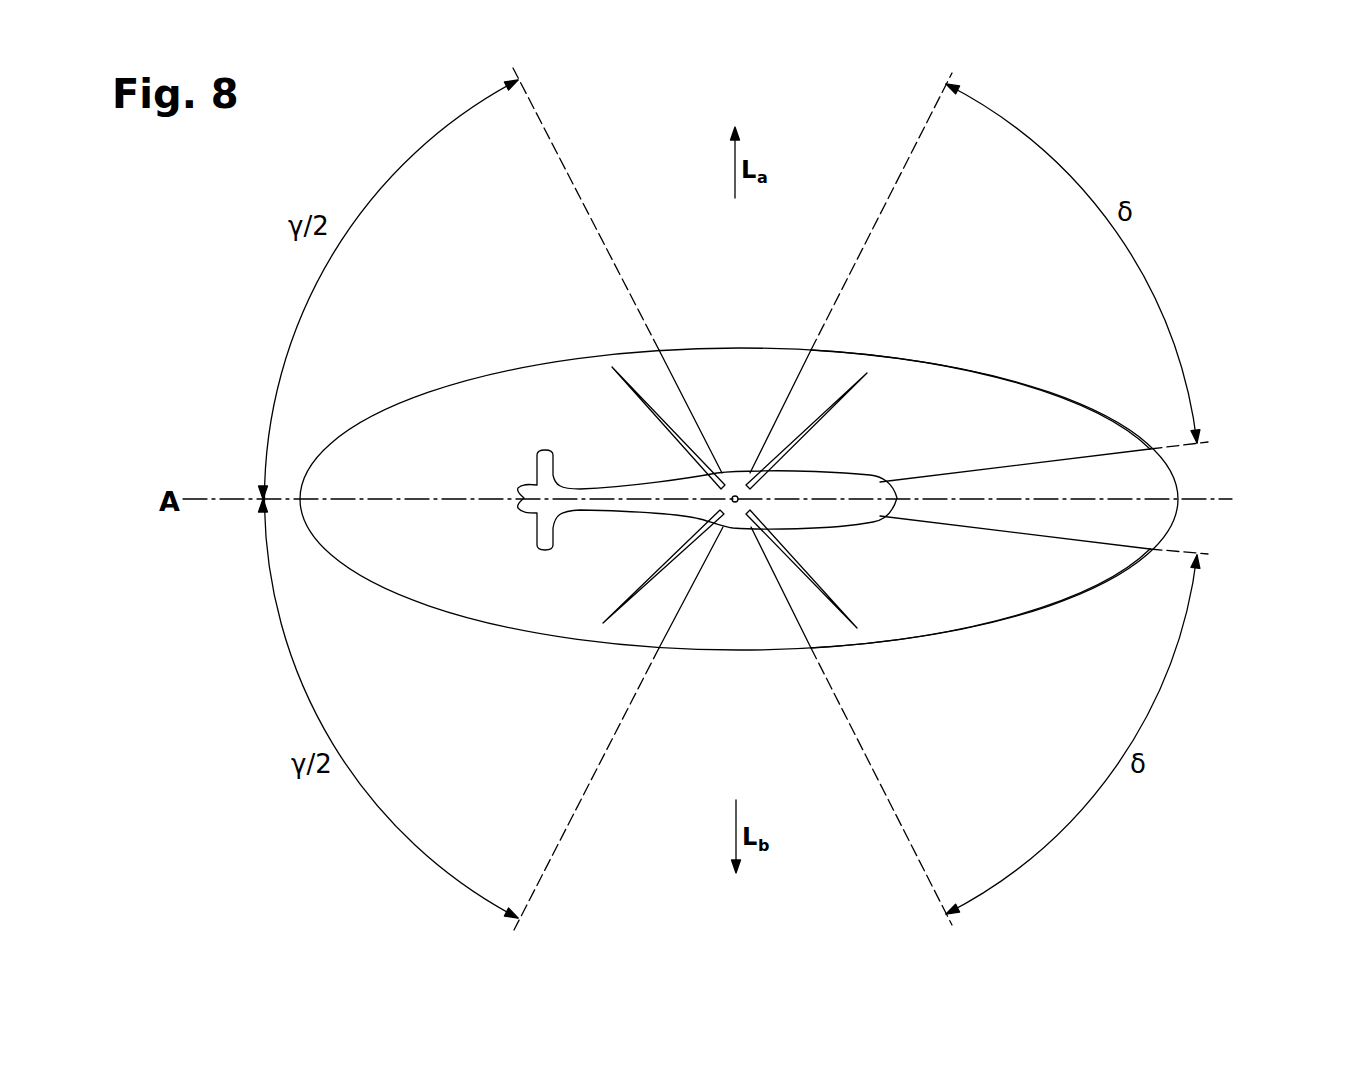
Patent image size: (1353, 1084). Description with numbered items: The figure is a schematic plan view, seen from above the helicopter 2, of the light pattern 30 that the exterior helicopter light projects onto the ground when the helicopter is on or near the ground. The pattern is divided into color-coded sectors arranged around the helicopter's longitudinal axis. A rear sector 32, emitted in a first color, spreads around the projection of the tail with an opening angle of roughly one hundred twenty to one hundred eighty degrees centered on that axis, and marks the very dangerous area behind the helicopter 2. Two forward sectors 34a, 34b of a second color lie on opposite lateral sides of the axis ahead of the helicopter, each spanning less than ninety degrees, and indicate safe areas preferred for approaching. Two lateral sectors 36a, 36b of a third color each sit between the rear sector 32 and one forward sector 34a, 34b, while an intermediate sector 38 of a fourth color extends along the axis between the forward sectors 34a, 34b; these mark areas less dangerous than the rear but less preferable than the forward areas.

The helicopter 2 is at (735, 546).
The light pattern 30 is at (940, 287).
The rear sector 32 is at (437, 640).
The forward sector 34a is at (1010, 358).
The forward sector 34b is at (1028, 638).
The lateral sector 36a is at (735, 327).
The lateral sector 36b is at (780, 672).
The intermediate sector 38 is at (1203, 468).